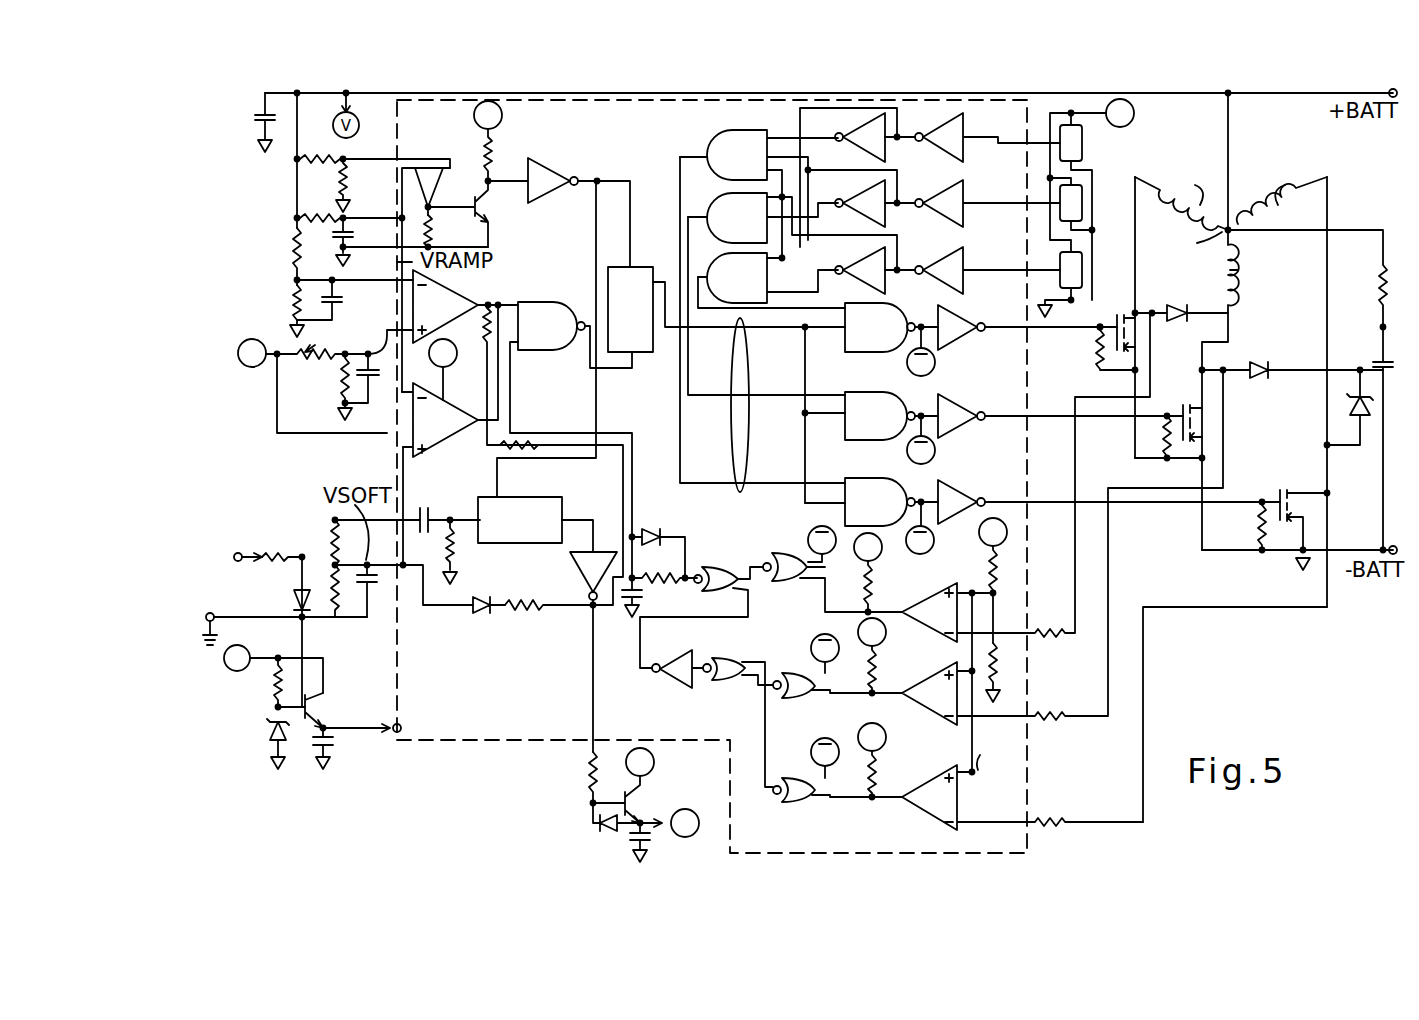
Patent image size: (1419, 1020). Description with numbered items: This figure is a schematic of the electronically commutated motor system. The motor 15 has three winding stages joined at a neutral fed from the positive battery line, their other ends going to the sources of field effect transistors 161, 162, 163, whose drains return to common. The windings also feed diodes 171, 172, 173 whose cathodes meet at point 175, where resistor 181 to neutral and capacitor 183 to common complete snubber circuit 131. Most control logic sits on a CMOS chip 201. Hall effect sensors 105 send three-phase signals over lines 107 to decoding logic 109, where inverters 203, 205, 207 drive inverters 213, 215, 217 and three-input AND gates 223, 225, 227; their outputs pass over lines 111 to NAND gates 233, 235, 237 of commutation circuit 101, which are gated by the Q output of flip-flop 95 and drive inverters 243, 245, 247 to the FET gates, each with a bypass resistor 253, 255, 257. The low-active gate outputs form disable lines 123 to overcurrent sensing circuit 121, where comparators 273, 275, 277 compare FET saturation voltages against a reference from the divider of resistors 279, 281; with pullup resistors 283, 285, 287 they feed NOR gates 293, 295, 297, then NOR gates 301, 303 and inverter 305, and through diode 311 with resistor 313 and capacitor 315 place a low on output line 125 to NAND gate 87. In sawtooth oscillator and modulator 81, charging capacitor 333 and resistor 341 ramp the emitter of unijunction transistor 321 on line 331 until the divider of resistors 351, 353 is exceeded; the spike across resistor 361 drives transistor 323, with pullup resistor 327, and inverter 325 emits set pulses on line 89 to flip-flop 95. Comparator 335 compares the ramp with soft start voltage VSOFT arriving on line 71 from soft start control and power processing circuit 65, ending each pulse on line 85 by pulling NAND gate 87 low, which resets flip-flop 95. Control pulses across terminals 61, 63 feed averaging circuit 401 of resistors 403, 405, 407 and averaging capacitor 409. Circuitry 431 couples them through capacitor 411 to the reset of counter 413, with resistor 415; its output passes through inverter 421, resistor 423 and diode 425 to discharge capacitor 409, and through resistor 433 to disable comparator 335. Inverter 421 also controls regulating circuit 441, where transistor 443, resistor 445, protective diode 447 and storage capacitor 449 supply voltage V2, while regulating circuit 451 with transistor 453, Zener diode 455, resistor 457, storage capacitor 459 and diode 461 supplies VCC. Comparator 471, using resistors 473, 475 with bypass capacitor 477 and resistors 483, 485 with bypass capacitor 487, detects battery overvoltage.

The motor 15 is at (1254, 176).
The terminal 61 is at (232, 556).
The terminal 63 is at (208, 613).
The soft start control and power processing circuit 65 is at (500, 762).
The line 71 is at (403, 476).
The sawtooth oscillator and modulator 81 is at (528, 250).
The line 85 is at (462, 416).
The NAND gate 87 is at (542, 308).
The line 89 is at (588, 178).
The flip-flop 95 is at (632, 268).
The commutation circuit 101 is at (1066, 379).
The Hall effect sensors 105 is at (1150, 166).
The lines 107 is at (988, 199).
The decoding logic 109 is at (712, 126).
The lines 111 is at (732, 390).
The overcurrent sensing circuit 121 is at (793, 543).
The disable lines 123 is at (947, 459).
The output line 125 is at (634, 498).
The snubber circuit 131 is at (1402, 341).
The field effect transistor 161 is at (1117, 315).
The field effect transistor 162 is at (1185, 402).
The field effect transistor 163 is at (1285, 490).
The diode 171 is at (1178, 303).
The diode 172 is at (1260, 360).
The diode 173 is at (1370, 420).
The point 175 is at (1380, 325).
The resistor 181 is at (1380, 272).
The capacitor 183 is at (1395, 372).
The custom integrated circuit chip 201 is at (1030, 853).
The inverter 203 is at (948, 128).
The inverter 205 is at (950, 190).
The inverter 207 is at (950, 258).
The inverter 213 is at (855, 132).
The inverter 215 is at (865, 197).
The inverter 217 is at (863, 264).
The AND gate 223 is at (707, 138).
The AND gate 225 is at (708, 197).
The AND gate 227 is at (708, 262).
The NAND gate 233 is at (910, 312).
The NAND gate 235 is at (880, 390).
The NAND gate 237 is at (886, 478).
The inverter 243 is at (965, 324).
The inverter 245 is at (947, 408).
The inverter 247 is at (960, 500).
The bypass resistor 253 is at (1096, 342).
The bypass resistor 255 is at (1163, 435).
The bypass resistor 257 is at (1258, 525).
The comparator 273 is at (940, 602).
The comparator 275 is at (945, 665).
The comparator 277 is at (950, 770).
The resistor 279 is at (1000, 570).
The resistor 281 is at (1005, 660).
The pullup resistor 283 is at (875, 582).
The pullup resistor 285 is at (877, 668).
The pullup resistor 287 is at (880, 768).
The NOR gate 293 is at (800, 582).
The NOR gate 295 is at (808, 698).
The NOR gate 297 is at (782, 782).
The NOR gate 301 is at (714, 568).
The NOR gate 303 is at (732, 658).
The inverter 305 is at (665, 658).
The diode 311 is at (655, 527).
The resistor 313 is at (676, 572).
The capacitor 315 is at (645, 597).
The unijunction transistor 321 is at (445, 190).
The NPN transistor 323 is at (492, 207).
The inverter 325 is at (550, 170).
The pullup resistor 327 is at (496, 158).
The line 331 is at (345, 218).
The charging capacitor 333 is at (333, 237).
The comparator 335 is at (438, 438).
The resistor 341 is at (298, 216).
The resistor 351 is at (300, 162).
The resistor 353 is at (363, 185).
The resistor 361 is at (433, 228).
The averaging circuit 401 is at (298, 505).
The resistor 403 is at (288, 565).
The resistor 405 is at (326, 520).
The resistor 407 is at (354, 618).
The averaging capacitor 409 is at (352, 610).
The capacitor 411 is at (425, 516).
The 13-stage counter 413 is at (512, 496).
The resistor 415 is at (455, 550).
The inverter 421 is at (574, 578).
The resistor 423 is at (522, 610).
The diode 425 is at (480, 615).
The circuitry 431 is at (508, 640).
The resistor 433 is at (508, 320).
The regulating circuit 441 is at (572, 812).
The NPN transistor 443 is at (642, 800).
The resistor 445 is at (588, 765).
The protective diode 447 is at (603, 832).
The storage capacitor 449 is at (655, 838).
The regulating circuit 451 is at (262, 719).
The NPN transistor 453 is at (318, 707).
The Zener diode 455 is at (268, 740).
The resistor 457 is at (274, 682).
The storage capacitor 459 is at (328, 750).
The diode 461 is at (294, 605).
The comparator 471 is at (444, 288).
The resistor 473 is at (303, 348).
The resistor 475 is at (340, 380).
The bypass capacitor 477 is at (380, 350).
The resistor 483 is at (296, 250).
The resistor 485 is at (296, 300).
The bypass capacitor 487 is at (340, 300).